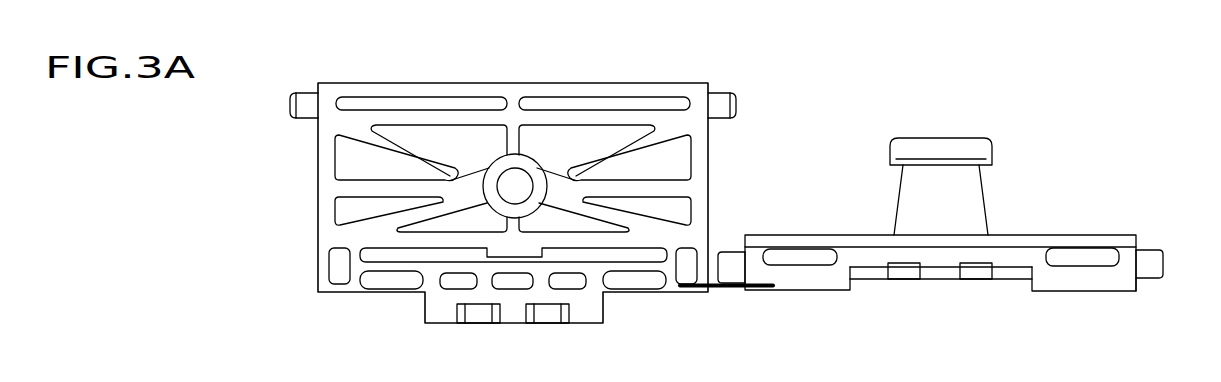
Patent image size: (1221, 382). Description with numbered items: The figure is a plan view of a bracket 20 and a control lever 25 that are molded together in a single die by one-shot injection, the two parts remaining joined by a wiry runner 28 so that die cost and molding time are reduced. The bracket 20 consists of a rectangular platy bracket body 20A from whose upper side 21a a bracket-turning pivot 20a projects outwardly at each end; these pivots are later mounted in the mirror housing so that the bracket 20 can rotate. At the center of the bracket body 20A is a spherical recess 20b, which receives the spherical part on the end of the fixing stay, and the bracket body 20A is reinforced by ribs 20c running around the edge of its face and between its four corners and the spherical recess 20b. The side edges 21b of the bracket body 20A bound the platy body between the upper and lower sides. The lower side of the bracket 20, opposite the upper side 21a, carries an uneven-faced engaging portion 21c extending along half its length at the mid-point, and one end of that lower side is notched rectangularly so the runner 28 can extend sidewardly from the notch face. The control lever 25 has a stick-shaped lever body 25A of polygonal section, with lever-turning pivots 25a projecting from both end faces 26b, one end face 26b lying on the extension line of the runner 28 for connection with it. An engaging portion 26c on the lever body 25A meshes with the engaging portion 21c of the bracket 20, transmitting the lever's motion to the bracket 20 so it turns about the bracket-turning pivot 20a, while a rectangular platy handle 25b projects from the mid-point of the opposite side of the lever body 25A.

The bracket 20 is at (303, 77).
The bracket body 20A is at (318, 202).
The bracket-turning pivot 20a is at (308, 103).
The spherical recess 20b is at (522, 182).
The ribs 20c is at (507, 138).
The upper side 21a is at (475, 83).
The side spring prongs 21b is at (318, 143).
The engaging portion 21c is at (556, 312).
The control lever 25 is at (1018, 178).
The lever body 25A is at (1093, 233).
The lever-turning pivot 25a is at (1150, 258).
The handle 25b is at (946, 139).
The end faces 26b is at (742, 238).
The engaging portion 26c is at (973, 270).
The runner 28 is at (714, 291).